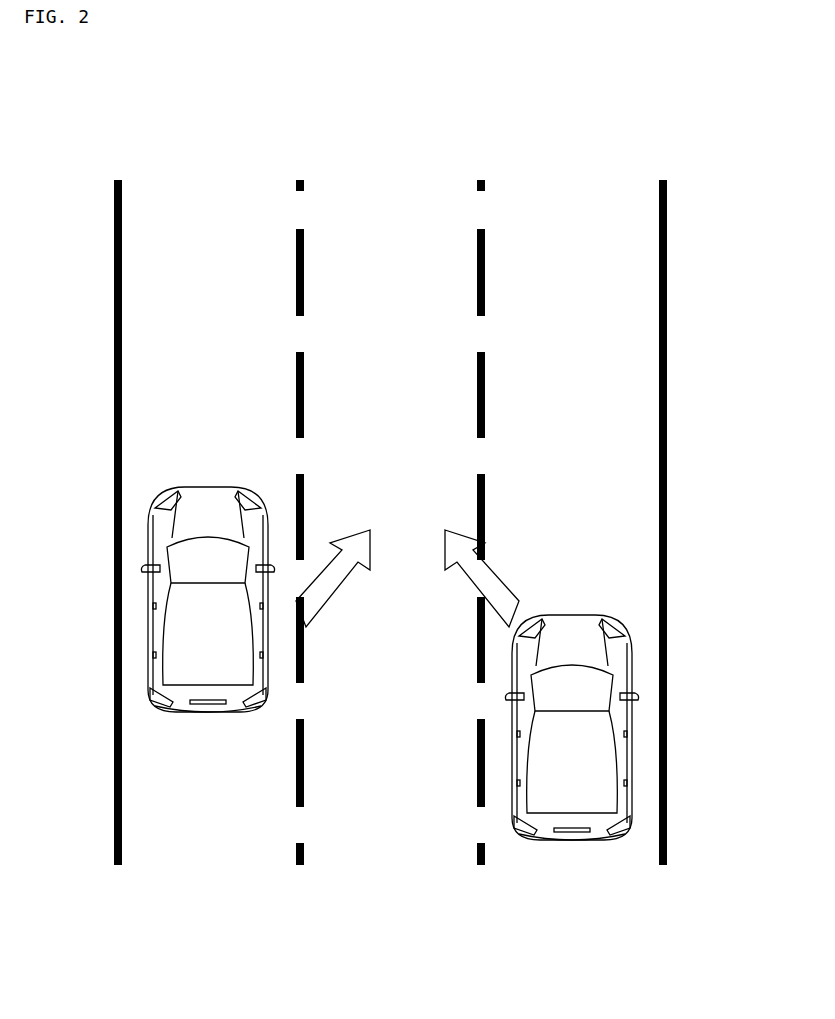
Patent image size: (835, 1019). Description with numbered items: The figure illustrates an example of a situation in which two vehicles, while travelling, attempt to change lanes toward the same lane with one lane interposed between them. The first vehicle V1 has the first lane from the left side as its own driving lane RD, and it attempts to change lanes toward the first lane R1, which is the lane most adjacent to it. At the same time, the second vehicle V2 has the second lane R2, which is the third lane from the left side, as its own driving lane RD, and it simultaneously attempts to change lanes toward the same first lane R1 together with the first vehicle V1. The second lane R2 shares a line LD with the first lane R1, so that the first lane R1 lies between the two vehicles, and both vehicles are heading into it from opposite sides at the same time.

The own driving lane RD is at (208, 255).
The first lane R1 is at (393, 253).
The line LD is at (478, 240).
The second lane R2 is at (572, 253).
The first vehicle V1 is at (183, 641).
The second vehicle V2 is at (580, 763).